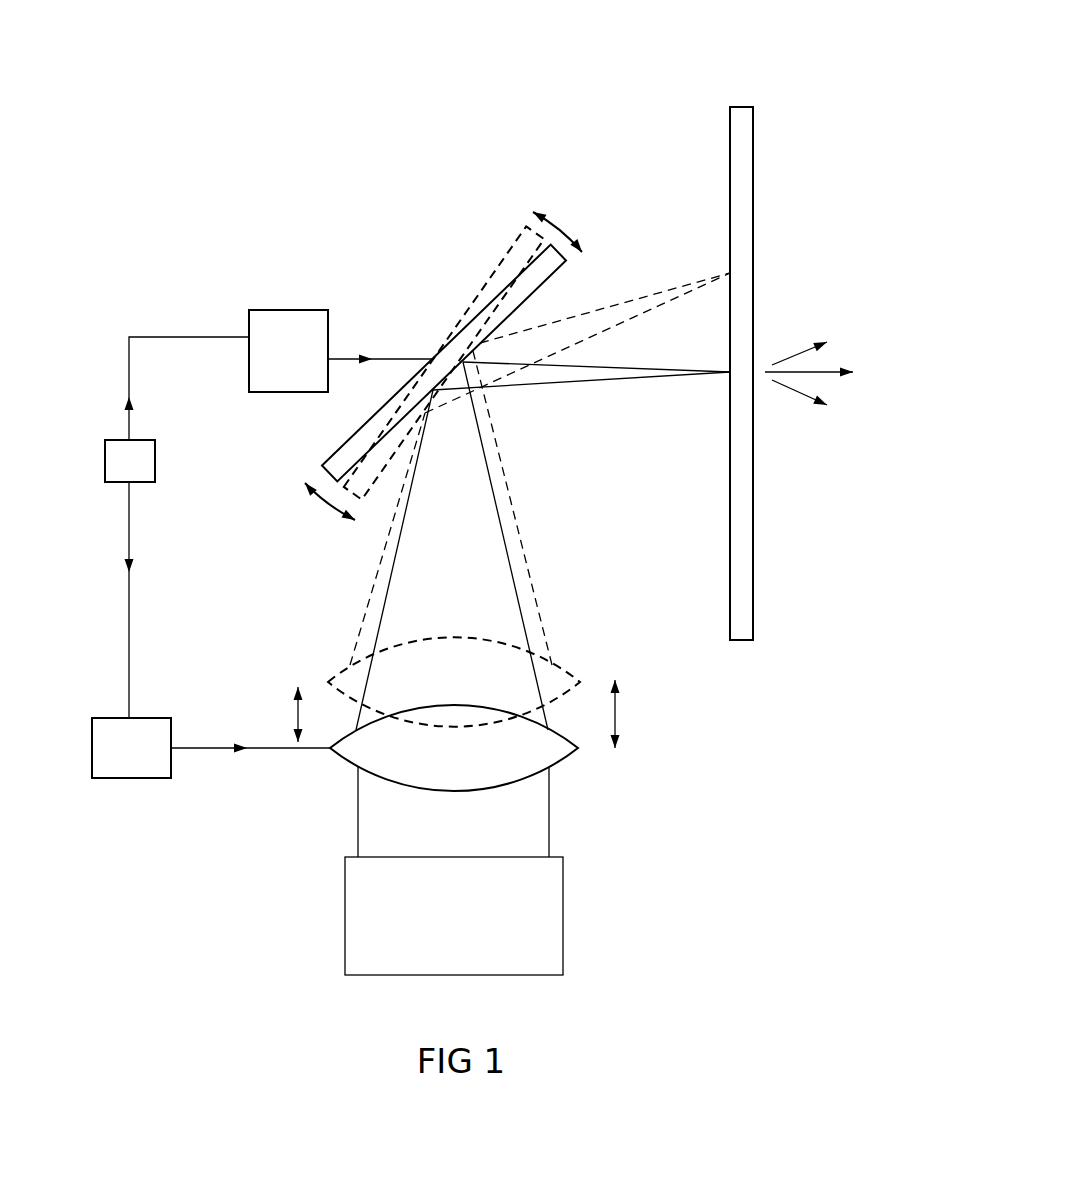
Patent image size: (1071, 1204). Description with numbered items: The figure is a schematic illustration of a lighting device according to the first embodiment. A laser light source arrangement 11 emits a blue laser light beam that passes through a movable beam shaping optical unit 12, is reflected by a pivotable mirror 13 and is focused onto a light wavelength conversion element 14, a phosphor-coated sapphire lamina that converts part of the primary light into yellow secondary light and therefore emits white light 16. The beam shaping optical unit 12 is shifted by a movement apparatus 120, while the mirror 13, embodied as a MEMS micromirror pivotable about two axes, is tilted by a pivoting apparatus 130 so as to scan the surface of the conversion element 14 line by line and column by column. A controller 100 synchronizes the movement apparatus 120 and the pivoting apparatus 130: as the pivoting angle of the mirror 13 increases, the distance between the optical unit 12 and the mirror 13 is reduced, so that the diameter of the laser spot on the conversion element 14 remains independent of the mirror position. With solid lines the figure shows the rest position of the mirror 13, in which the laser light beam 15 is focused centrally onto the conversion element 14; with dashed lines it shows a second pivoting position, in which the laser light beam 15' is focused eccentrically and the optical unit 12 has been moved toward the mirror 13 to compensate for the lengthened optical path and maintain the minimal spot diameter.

The laser light source arrangement 11 is at (552, 917).
The movable beam shaping optical unit 12 is at (523, 757).
The pivotable mirror 13 is at (345, 453).
The light wavelength conversion element 14 is at (742, 135).
The laser light beam 15 is at (543, 546).
The laser light beam 15' is at (540, 419).
The white light 16 is at (809, 399).
The controller 100 is at (122, 455).
The movement apparatus 120 is at (132, 766).
The pivoting apparatus 130 is at (286, 322).